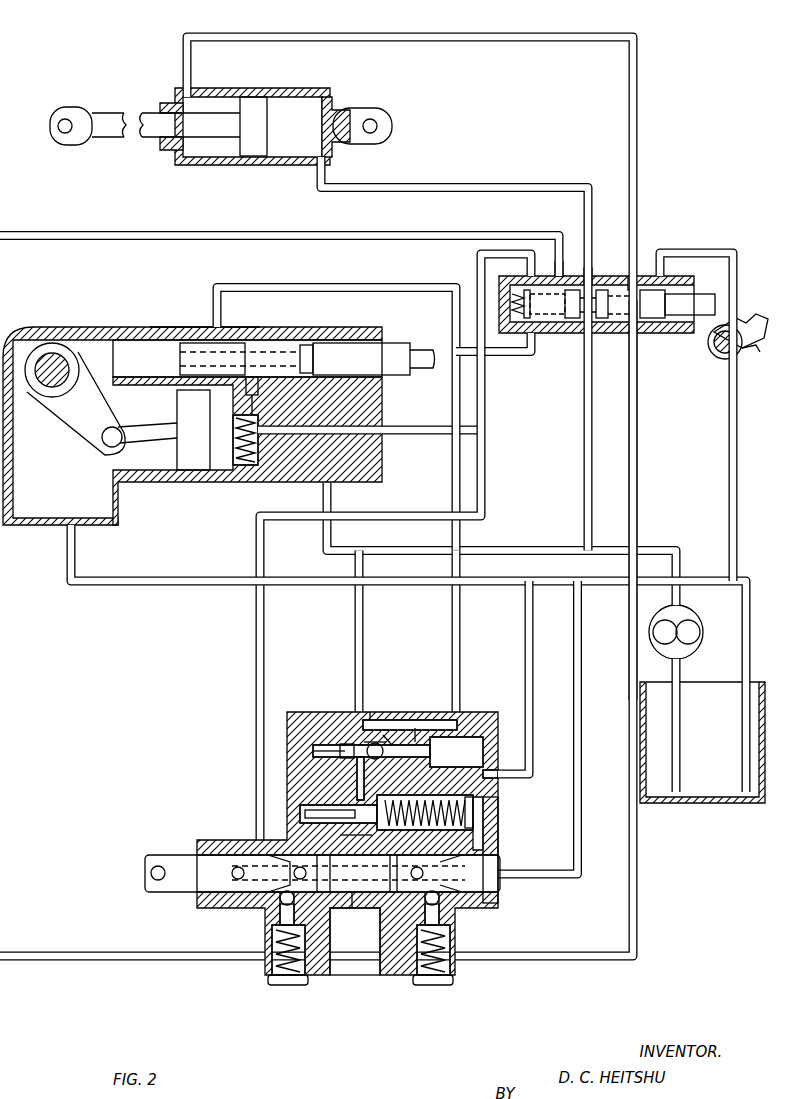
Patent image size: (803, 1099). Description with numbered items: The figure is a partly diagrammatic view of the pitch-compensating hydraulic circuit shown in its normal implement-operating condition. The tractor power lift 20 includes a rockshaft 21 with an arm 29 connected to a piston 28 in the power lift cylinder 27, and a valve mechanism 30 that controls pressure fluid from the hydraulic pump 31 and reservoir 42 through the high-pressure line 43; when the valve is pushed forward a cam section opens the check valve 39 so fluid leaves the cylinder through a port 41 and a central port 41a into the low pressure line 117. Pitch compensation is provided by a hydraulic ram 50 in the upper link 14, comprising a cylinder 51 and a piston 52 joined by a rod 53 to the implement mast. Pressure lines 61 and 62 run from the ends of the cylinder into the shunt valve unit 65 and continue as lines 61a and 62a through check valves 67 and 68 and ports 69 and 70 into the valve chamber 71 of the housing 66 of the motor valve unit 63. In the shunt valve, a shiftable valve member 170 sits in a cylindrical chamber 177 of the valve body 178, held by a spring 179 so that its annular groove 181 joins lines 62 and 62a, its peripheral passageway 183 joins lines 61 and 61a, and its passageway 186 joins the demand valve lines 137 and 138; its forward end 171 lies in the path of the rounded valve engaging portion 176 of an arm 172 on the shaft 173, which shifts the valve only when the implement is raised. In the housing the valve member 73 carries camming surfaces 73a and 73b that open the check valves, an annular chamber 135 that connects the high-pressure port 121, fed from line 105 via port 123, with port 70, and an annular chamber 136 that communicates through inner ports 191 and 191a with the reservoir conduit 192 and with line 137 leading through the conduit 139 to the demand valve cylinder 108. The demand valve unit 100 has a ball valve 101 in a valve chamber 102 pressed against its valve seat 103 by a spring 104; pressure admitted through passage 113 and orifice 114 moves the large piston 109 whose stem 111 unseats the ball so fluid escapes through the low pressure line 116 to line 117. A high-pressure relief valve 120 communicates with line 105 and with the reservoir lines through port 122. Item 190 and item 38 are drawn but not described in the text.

The pressure line 62 is at (432, 33).
The hydraulic ram 50 is at (275, 88).
The cylinder 51 is at (300, 88).
The piston 52 is at (253, 140).
The rod 53 is at (142, 113).
The upper link 14 is at (148, 148).
The pressure line 61 is at (503, 183).
The pressure line continuation 61a is at (380, 232).
The passageway 186 is at (555, 262).
The peripheral passageway 183 is at (575, 268).
The spring 179 is at (498, 295).
The shunt valve unit 65 is at (611, 276).
The annular groove 181 is at (634, 275).
The forward end 171 is at (707, 294).
The valve engaging portion 176 is at (756, 316).
The shiftable valve member 170 is at (573, 318).
The cylindrical chamber 177 is at (612, 318).
The valve body 178 is at (650, 322).
The shaft 173 is at (714, 352).
The arm 172 is at (758, 352).
The demand valve line 138 is at (522, 355).
The line 137 is at (483, 392).
The conduit 190 is at (729, 424).
The pressure line continuation 62a is at (637, 462).
The power lift 20 is at (95, 327).
The central port 41a is at (190, 327).
The piston 38 is at (238, 343).
The port 41 is at (300, 350).
The valve mechanism 30 is at (312, 340).
The rockshaft 21 is at (68, 366).
The piston 28 is at (180, 403).
The check valve 39 is at (235, 425).
The arm 29 is at (75, 418).
The power lift cylinder 27 is at (150, 483).
The high-pressure line 43 is at (332, 498).
The conduit 139 is at (452, 485).
The low pressure line 117 is at (194, 577).
The pressure line 105 is at (355, 632).
The low pressure line 116 is at (462, 650).
The housing 66 is at (470, 710).
The orifice 114 is at (372, 705).
The demand valve unit 100 is at (398, 712).
The valve chamber 102 is at (346, 738).
The valve seat 103 is at (386, 735).
The spring 104 is at (330, 742).
The ball valve 101 is at (373, 740).
The stem 111 is at (416, 735).
The passage 113 is at (450, 735).
The cylinder 108 is at (478, 752).
The piston 109 is at (436, 755).
The port 123 is at (357, 778).
The high-pressure relief valve 120 is at (340, 810).
The high-pressure port 121 is at (333, 817).
The port 122 is at (499, 778).
The motor valve unit 63 is at (500, 819).
The annular chamber 136 is at (355, 833).
The reservoir conduit 192 is at (581, 770).
The valve member 73 is at (182, 863).
The inner port 191a is at (234, 876).
The inner port 191 is at (472, 886).
The camming surface 73a is at (270, 893).
The camming surface 73b is at (458, 896).
The check valve 67 is at (280, 923).
The check valve 68 is at (440, 930).
The valve chamber 71 is at (352, 892).
The annular chamber 135 is at (374, 892).
The port 69 is at (324, 905).
The port 70 is at (396, 905).
The hydraulic pump 31 is at (690, 652).
The reservoir 42 is at (702, 803).